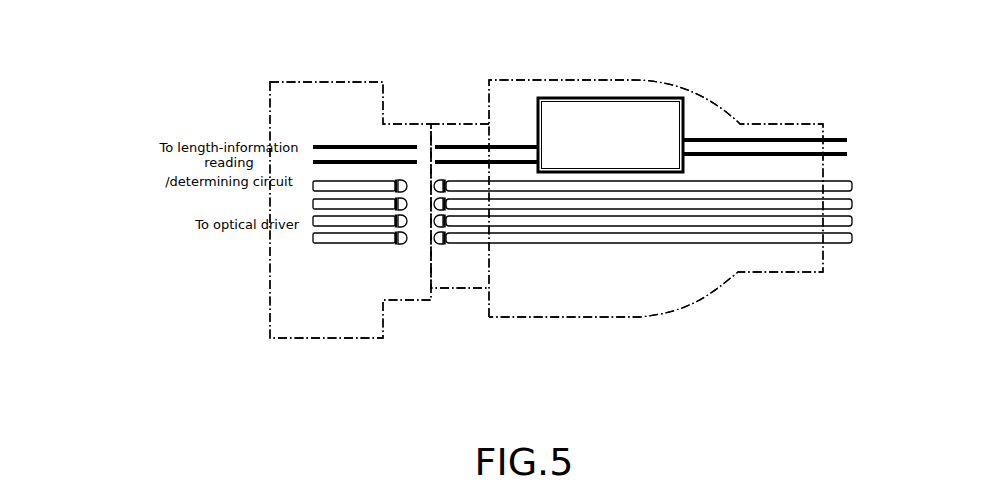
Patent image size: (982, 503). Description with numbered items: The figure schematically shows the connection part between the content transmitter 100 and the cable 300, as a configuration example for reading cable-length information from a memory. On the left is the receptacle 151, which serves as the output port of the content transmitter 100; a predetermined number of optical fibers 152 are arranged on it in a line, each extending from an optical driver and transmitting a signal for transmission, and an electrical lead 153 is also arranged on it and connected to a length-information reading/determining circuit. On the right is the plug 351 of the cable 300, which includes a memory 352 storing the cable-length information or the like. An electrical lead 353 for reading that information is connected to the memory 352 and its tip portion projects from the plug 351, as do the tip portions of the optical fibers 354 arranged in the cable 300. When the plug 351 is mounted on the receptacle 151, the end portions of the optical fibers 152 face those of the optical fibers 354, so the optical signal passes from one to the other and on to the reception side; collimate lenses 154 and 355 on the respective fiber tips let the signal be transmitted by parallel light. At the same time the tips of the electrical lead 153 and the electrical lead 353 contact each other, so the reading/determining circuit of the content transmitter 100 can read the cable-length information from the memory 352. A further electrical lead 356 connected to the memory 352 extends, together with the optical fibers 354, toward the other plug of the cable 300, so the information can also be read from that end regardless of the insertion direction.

The content transmitter 100 is at (211, 394).
The receptacle 151 is at (317, 342).
The optical fibers 152 is at (353, 238).
The electrical lead 153 is at (339, 146).
The collimate lens 154 is at (400, 245).
The cable 300 is at (761, 394).
The plug 351 is at (590, 318).
The memory 352 is at (618, 97).
The electrical lead 353 is at (507, 146).
The optical fibers 354 is at (525, 242).
The collimate lens 355 is at (440, 245).
The electrical lead 356 is at (785, 139).